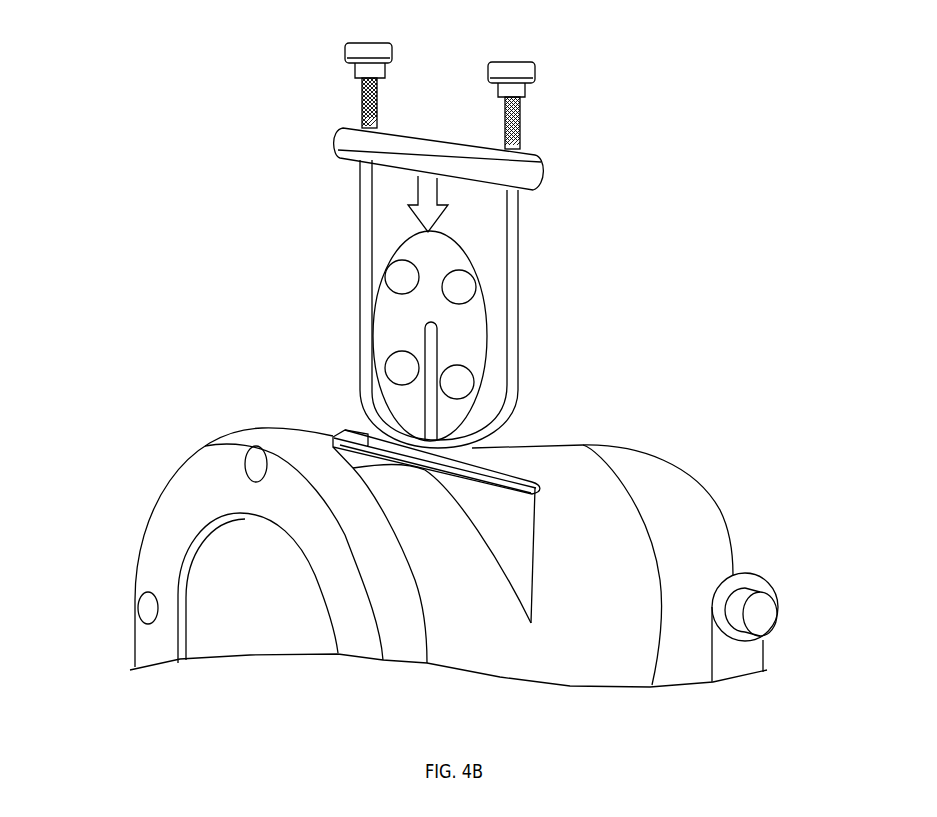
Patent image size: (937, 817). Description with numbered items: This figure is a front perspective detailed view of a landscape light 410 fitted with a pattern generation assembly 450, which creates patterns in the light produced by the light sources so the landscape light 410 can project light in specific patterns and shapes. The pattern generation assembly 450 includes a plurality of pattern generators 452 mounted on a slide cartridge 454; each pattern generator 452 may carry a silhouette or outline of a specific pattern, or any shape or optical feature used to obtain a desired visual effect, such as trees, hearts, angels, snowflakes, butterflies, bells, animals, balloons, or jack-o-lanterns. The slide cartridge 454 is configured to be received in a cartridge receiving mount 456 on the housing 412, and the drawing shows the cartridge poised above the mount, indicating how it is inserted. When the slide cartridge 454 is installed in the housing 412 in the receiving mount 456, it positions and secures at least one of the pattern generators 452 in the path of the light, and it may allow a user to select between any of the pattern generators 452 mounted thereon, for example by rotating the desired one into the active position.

The landscape light 410 is at (59, 31).
The housing 412 is at (642, 477).
The pattern generation assembly 450 is at (577, 118).
The pattern generators 452 is at (385, 358).
The slide cartridge 454 is at (523, 223).
The cartridge receiving mount 456 is at (507, 475).